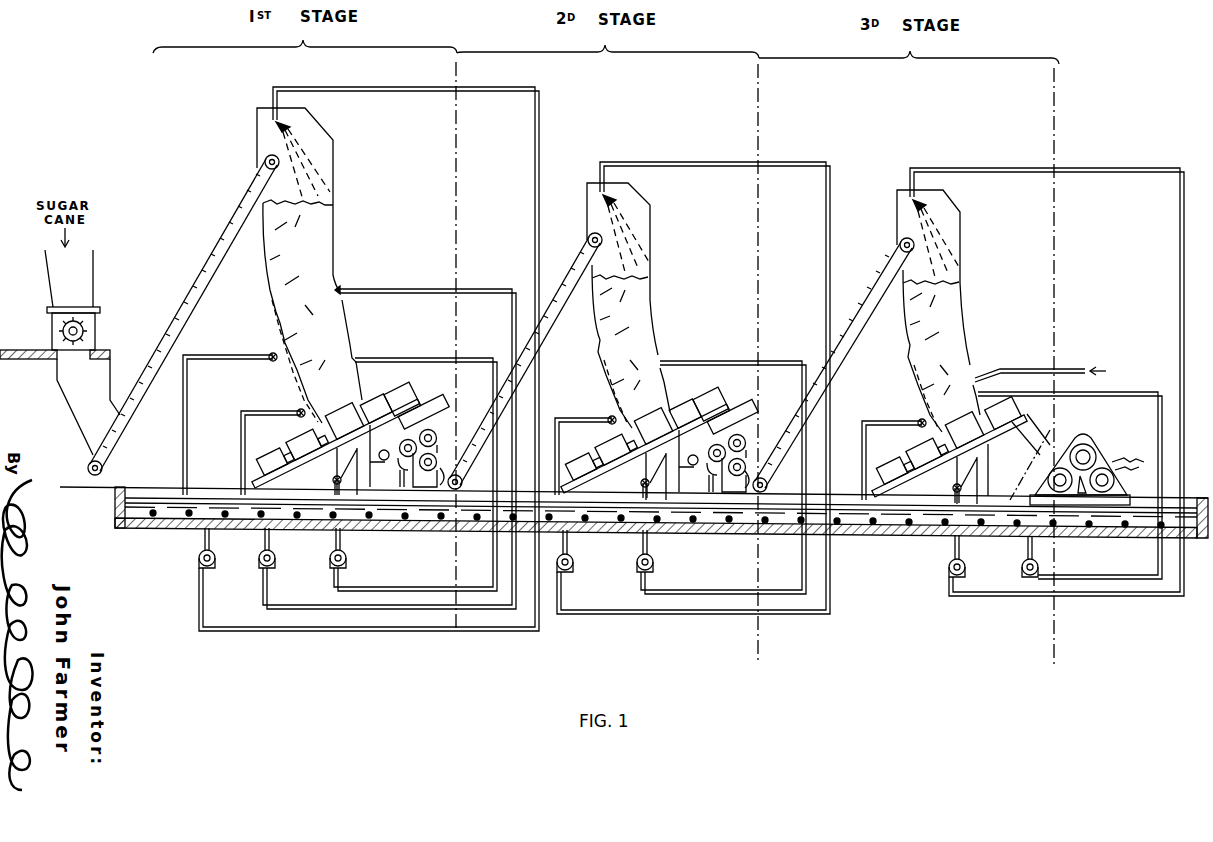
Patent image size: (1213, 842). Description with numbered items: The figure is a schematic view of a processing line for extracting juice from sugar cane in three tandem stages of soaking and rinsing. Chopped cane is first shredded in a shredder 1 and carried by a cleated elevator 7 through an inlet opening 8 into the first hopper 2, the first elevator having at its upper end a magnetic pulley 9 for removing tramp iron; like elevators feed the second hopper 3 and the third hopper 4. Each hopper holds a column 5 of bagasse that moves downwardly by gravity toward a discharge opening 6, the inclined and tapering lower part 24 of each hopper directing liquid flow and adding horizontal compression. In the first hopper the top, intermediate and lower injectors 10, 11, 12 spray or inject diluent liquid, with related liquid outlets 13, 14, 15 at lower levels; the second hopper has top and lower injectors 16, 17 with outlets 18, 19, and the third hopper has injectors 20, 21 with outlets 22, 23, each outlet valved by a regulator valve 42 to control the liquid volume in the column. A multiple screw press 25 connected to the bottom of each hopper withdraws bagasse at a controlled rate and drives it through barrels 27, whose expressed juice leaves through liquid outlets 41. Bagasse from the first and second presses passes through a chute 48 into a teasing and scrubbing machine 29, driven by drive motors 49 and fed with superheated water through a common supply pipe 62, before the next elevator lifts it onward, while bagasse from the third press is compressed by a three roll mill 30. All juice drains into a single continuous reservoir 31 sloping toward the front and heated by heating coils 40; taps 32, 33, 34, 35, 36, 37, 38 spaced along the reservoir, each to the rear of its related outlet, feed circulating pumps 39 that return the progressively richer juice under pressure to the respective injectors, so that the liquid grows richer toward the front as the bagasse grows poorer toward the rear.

The shredder 1 is at (100, 334).
The first hopper 2 is at (336, 195).
The second hopper 3 is at (652, 272).
The third hopper 4 is at (962, 272).
The column of bagasse 5 is at (312, 252).
The discharge opening 6 is at (654, 426).
The elevator 7 is at (205, 262).
The inlet opening 8 is at (262, 165).
The magnetic pulley 9 is at (268, 156).
The top injector 10 is at (292, 132).
The intermediate injector 11 is at (343, 283).
The lower injector 12 is at (356, 352).
The liquid outlet 13 is at (270, 350).
The liquid outlet 14 is at (298, 407).
The liquid outlet 15 is at (333, 478).
The top injector 16 is at (617, 206).
The lower injector 17 is at (662, 357).
The liquid outlet 18 is at (609, 415).
The liquid outlet 19 is at (641, 481).
The top injector 20 is at (927, 211).
The lower injector 21 is at (980, 387).
The liquid outlet 22 is at (920, 418).
The liquid outlet 23 is at (953, 486).
The lower part of hopper 24 is at (340, 325).
The multiple screw press 25 is at (388, 393).
The barrel 27 is at (378, 393).
The teasing and scrubbing machine 29 is at (436, 430).
The three roll mill 30 is at (1083, 436).
The reservoir 31 is at (895, 540).
The tap 32 is at (206, 540).
The tap 33 is at (268, 540).
The tap 34 is at (338, 541).
The tap 35 is at (563, 545).
The tap 36 is at (644, 546).
The tap 37 is at (953, 551).
The tap 38 is at (1024, 552).
The circulating pump 39 is at (198, 558).
The heating coils 40 is at (378, 520).
The liquid outlet 41 is at (662, 474).
The regulator valve 42 is at (275, 361).
The chute 48 is at (422, 414).
The drive motor 49 is at (270, 460).
The common supply pipe 62 is at (555, 489).